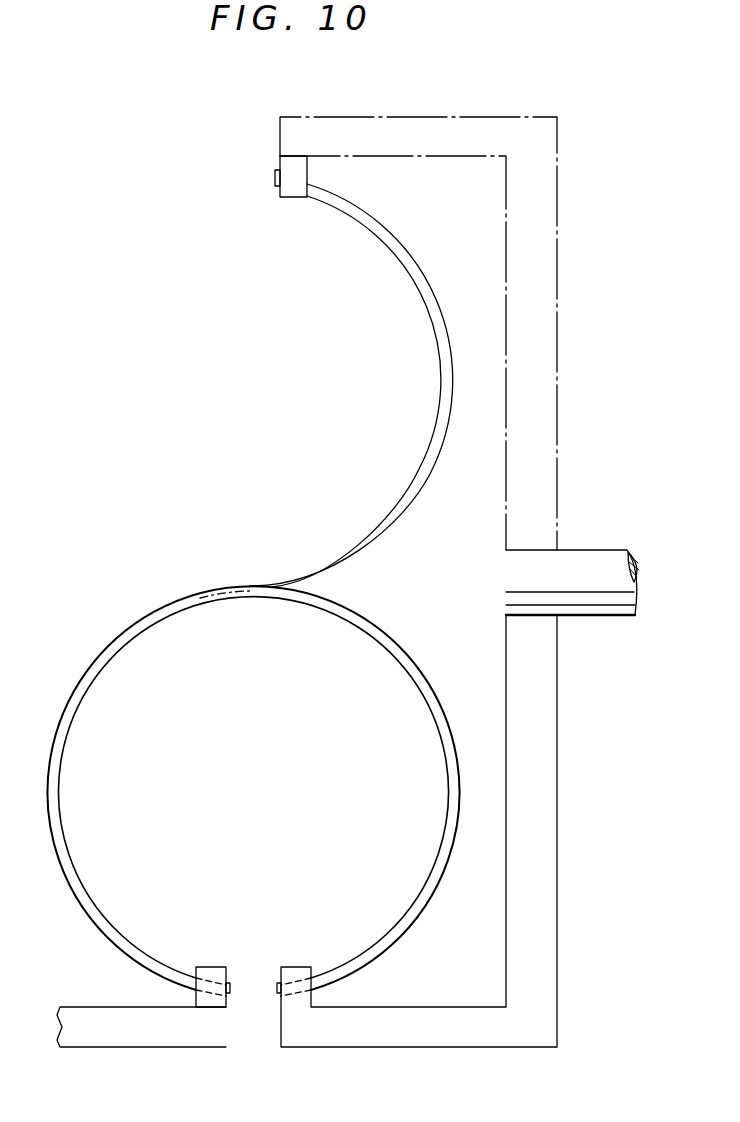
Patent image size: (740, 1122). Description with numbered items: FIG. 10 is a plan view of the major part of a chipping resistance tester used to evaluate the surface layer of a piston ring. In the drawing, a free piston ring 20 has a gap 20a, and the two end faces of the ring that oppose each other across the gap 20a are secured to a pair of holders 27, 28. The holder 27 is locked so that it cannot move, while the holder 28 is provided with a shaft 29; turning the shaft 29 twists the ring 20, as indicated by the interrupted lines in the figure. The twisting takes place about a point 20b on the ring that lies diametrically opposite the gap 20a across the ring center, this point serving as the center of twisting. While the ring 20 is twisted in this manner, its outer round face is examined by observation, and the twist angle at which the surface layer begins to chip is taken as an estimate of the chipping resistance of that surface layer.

The free piston ring 20 is at (352, 617).
The gap 20a is at (251, 990).
The point 20b is at (246, 587).
The holder 27 is at (158, 1027).
The holder 28 is at (488, 137).
The shaft 29 is at (590, 566).